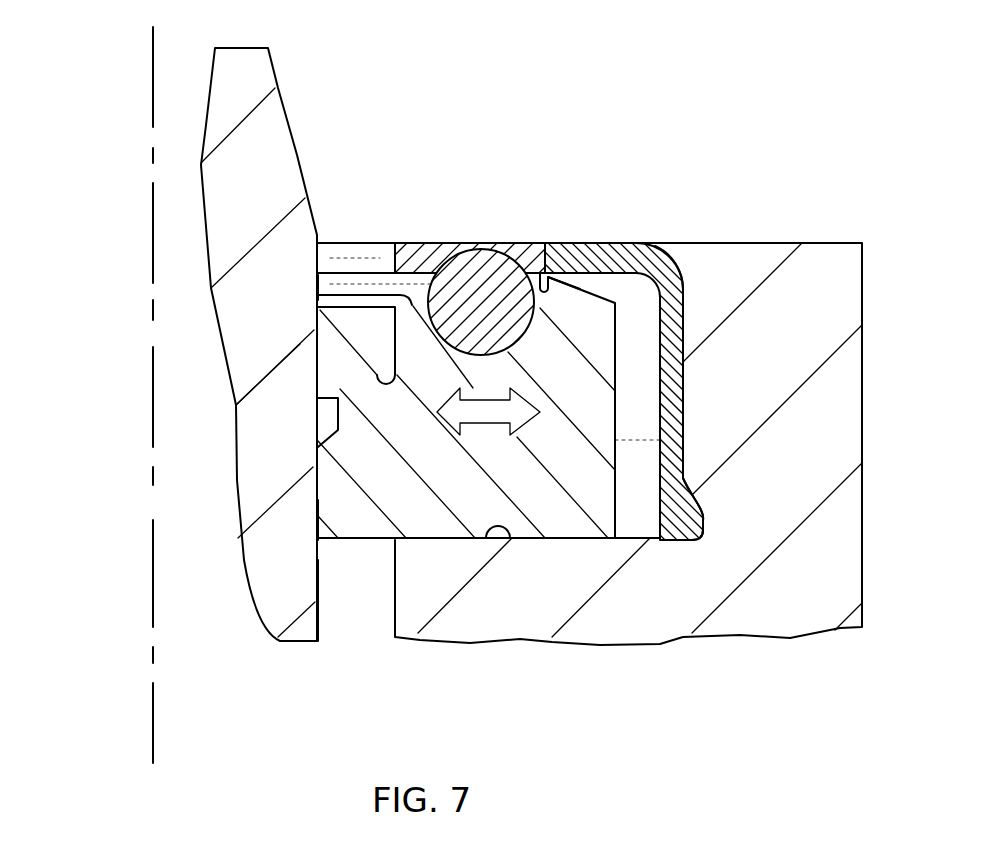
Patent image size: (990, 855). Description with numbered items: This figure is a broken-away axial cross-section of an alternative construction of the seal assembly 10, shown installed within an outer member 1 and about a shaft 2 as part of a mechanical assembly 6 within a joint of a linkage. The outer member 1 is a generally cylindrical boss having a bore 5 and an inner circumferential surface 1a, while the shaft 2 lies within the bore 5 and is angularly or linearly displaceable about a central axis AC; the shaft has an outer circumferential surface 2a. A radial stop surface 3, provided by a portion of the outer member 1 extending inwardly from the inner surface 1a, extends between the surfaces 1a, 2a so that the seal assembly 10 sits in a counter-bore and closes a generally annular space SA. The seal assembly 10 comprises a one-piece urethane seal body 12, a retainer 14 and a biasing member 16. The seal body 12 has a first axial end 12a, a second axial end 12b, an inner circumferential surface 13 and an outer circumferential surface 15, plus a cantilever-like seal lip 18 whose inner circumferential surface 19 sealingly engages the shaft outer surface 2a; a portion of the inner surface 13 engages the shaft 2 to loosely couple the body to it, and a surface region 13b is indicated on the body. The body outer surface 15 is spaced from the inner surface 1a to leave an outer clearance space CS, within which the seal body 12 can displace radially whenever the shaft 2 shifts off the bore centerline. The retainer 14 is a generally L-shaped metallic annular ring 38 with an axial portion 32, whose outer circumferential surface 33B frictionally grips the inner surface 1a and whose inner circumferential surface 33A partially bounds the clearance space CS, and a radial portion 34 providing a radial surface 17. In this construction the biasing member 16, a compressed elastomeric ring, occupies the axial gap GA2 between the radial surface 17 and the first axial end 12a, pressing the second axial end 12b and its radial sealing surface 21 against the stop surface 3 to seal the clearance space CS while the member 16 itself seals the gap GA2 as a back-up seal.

The outer member 1 is at (905, 270).
The inner circumferential surface 1a is at (687, 378).
The shaft 2 is at (350, 95).
The outer circumferential surface 2a is at (318, 574).
The radial stop surface 3 is at (507, 543).
The bore 5 is at (363, 607).
The mechanical assembly 6 is at (607, 60).
The seal assembly 10 is at (487, 90).
The seal body 12 is at (268, 467).
The first axial end 12a is at (572, 243).
The second axial end 12b is at (548, 550).
The inner circumferential surface 13 is at (313, 515).
The piston inner surface 13b is at (313, 518).
The retainer 14 is at (548, 190).
The outer circumferential surface 15 is at (615, 314).
The biasing member 16 is at (481, 233).
The radial surface 17 is at (627, 243).
The seal lip 18 is at (287, 344).
The inner circumferential surface 19 is at (315, 305).
The radial sealing surface 21 is at (455, 583).
The axial portion 32 is at (690, 495).
The inner circumferential surface 33A is at (675, 470).
The outer circumferential surface 33B is at (685, 410).
The radial portion 34 is at (528, 232).
The annular ring 38 is at (697, 282).
The annular space SA is at (346, 258).
The axial gap GA2 is at (410, 283).
The outer clearance space CS is at (637, 450).
The central axis AC is at (153, 712).